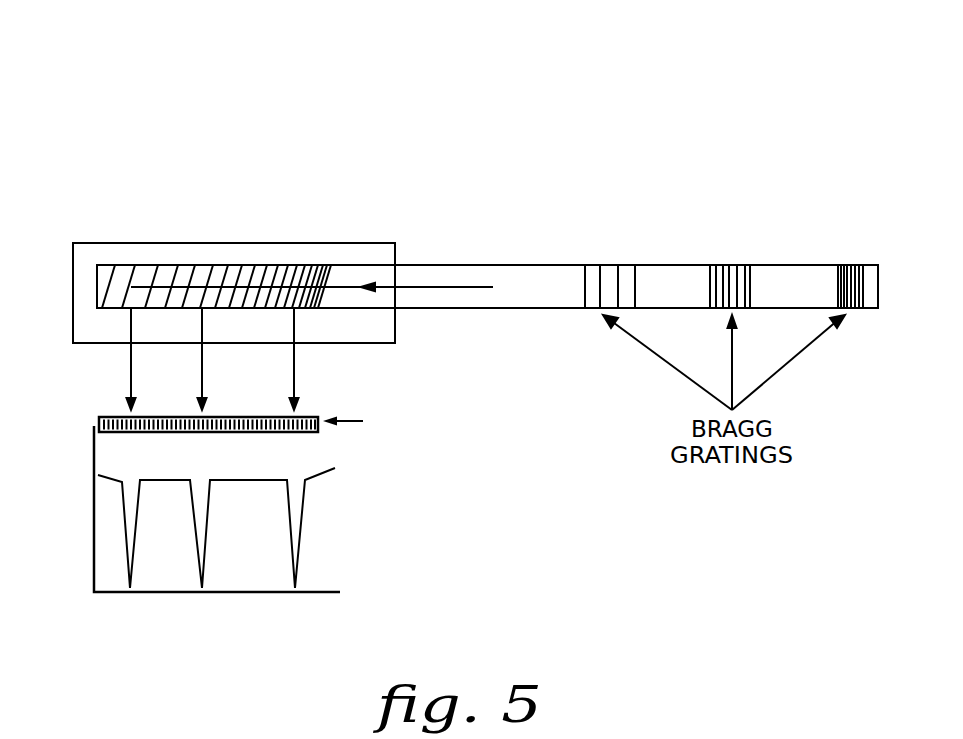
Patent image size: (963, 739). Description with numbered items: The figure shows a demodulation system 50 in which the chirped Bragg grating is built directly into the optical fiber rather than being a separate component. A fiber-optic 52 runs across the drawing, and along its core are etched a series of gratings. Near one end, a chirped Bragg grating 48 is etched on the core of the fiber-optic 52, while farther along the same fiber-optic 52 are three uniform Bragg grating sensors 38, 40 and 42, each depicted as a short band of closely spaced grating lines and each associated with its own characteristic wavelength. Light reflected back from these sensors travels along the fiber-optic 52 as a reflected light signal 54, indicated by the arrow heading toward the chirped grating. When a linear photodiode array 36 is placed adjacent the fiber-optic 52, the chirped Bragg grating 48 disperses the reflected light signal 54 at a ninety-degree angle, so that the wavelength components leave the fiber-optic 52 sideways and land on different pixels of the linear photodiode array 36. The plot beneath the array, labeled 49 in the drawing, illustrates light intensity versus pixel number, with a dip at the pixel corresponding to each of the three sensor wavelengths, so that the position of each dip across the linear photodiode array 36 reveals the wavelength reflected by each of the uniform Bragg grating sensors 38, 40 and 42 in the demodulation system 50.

The demodulation system 50 is at (159, 135).
The fiber-optic 52 is at (448, 264).
The chirped Bragg grating 48 is at (240, 310).
The reflected light signal 54 is at (420, 308).
The uniform Bragg grating sensor 38 is at (627, 264).
The uniform Bragg grating sensor 40 is at (745, 264).
The uniform Bragg grating sensor 42 is at (853, 264).
The linear photodiode array 36 is at (318, 432).
The light intensity versus pixel number plot 49 is at (338, 528).